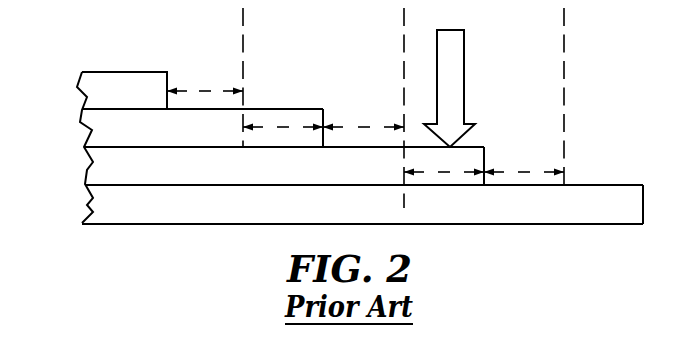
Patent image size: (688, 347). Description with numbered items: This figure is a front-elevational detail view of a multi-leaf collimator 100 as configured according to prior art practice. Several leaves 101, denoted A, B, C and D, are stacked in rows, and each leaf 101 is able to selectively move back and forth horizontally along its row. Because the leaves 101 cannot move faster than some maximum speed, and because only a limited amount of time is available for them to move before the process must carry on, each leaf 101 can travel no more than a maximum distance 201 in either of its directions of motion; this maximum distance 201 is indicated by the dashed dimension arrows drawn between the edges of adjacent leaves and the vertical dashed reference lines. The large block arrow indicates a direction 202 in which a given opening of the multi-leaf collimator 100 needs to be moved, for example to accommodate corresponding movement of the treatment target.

The multi-leaf collimator 100 is at (333, 165).
The leaves 101 is at (95, 168).
The maximum distance 201 is at (203, 90).
The direction 202 is at (464, 59).